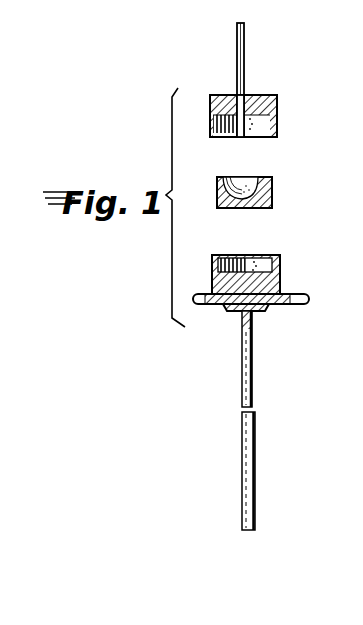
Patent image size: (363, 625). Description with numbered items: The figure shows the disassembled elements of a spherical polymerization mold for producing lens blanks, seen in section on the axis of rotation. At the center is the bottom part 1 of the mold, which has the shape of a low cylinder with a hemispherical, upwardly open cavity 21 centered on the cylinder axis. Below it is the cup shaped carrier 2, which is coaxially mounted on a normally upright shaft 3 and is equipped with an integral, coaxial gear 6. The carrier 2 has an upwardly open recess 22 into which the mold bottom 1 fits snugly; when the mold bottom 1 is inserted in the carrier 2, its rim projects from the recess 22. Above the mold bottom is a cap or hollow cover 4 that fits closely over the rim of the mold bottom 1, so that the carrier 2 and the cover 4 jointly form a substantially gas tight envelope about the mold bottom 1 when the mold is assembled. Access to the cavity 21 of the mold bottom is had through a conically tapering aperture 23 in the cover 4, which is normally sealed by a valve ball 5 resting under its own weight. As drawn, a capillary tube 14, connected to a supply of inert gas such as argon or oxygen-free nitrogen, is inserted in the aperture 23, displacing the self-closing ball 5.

The bottom part 1 is at (256, 178).
The cup shaped carrier 2 is at (260, 267).
The shaft 3 is at (252, 390).
The cover 4 is at (277, 124).
The valve ball 5 is at (248, 95).
The gear 6 is at (303, 299).
The capillary tube 14 is at (244, 62).
The cavity 21 is at (245, 180).
The recess 22 is at (255, 260).
The aperture 23 is at (237, 95).